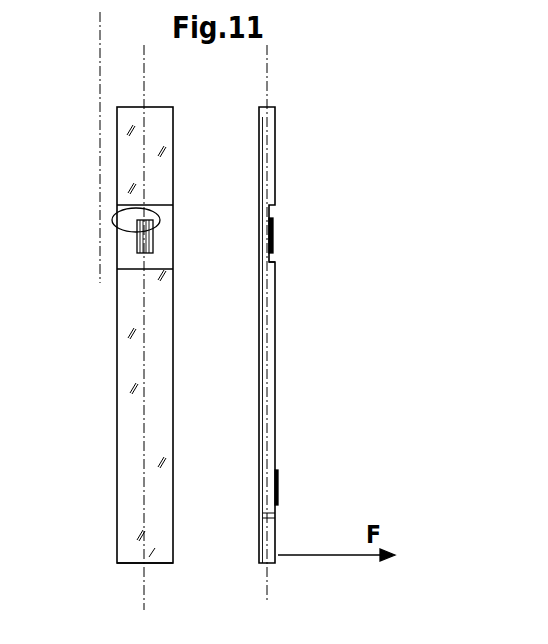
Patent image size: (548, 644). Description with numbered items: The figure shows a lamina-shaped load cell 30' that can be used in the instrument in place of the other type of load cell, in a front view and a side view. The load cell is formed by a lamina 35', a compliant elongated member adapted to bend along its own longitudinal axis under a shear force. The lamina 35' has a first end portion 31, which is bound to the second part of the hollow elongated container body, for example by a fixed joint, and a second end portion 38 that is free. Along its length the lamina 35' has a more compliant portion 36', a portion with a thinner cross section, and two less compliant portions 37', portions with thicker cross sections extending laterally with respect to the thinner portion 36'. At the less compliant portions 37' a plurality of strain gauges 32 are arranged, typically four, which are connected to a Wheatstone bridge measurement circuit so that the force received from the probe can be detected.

The lamina-shaped load cell 30' is at (283, 312).
The first end portion 31 is at (136, 107).
The strain gauges 32 is at (118, 231).
The lamina 35' is at (149, 341).
The more compliant portion 36' is at (323, 268).
The less compliant portions 37' is at (322, 335).
The second end portion 38 is at (137, 564).